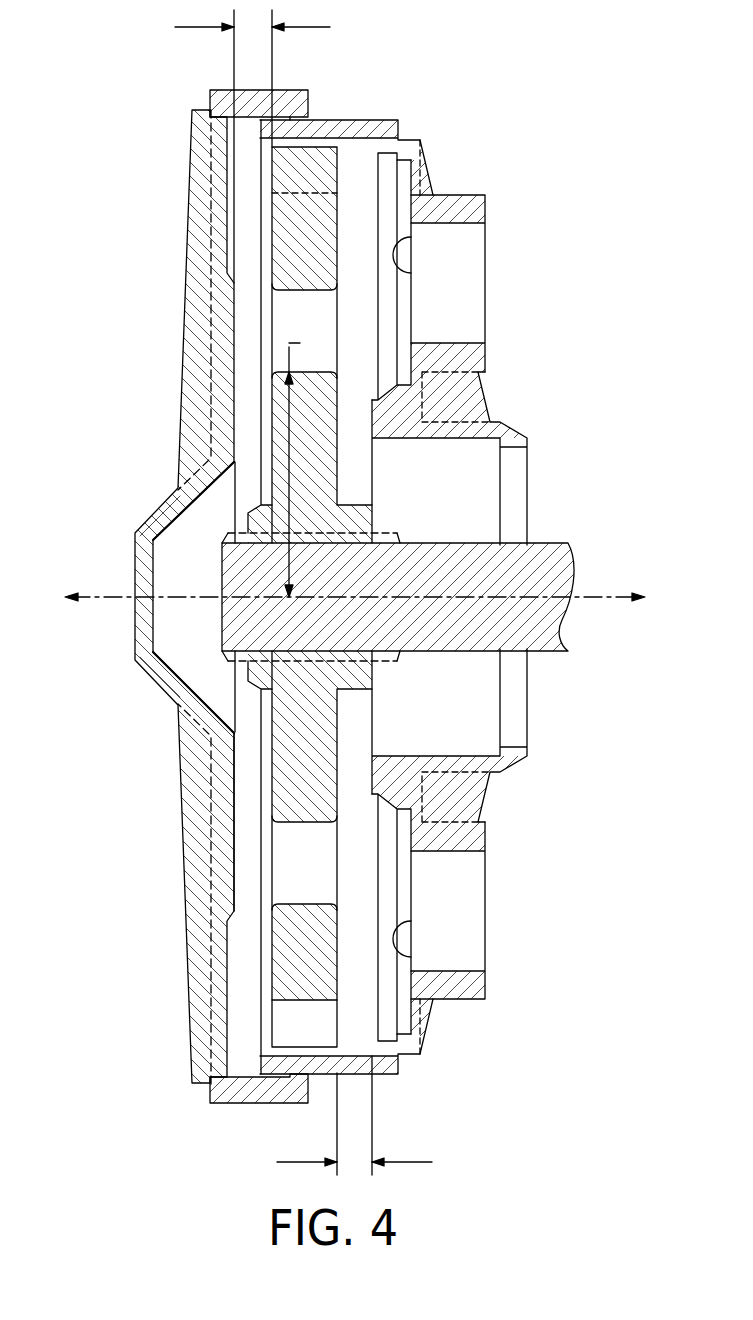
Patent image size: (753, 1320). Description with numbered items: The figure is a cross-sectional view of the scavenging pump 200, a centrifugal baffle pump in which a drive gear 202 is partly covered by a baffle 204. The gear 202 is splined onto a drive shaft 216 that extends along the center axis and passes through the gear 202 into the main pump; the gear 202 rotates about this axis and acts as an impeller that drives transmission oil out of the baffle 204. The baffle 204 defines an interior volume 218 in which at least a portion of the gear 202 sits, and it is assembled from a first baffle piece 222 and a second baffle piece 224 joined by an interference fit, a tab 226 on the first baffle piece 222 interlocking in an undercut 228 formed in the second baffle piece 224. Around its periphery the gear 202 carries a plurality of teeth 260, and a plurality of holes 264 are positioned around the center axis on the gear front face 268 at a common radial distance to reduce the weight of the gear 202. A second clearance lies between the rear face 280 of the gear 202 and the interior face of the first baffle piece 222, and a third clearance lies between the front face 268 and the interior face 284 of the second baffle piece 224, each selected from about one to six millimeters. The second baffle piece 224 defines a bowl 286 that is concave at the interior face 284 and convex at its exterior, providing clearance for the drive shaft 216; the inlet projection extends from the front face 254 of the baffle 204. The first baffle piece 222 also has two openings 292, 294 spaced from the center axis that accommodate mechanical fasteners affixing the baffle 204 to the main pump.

The scavenging pump 200 is at (128, 80).
The drive gear 202 is at (313, 228).
The baffle 204 is at (290, 90).
The drive shaft 216 is at (537, 563).
The interior volume 218 is at (248, 327).
The first baffle piece 222 is at (383, 130).
The second baffle piece 224 is at (190, 215).
The tab 226 is at (267, 1075).
The undercut 228 is at (299, 1077).
The front face 254 is at (190, 933).
The teeth 260 is at (290, 1020).
The holes 264 is at (303, 822).
The gear front face 268 is at (268, 418).
The rear face 280 is at (337, 462).
The interior face 284 is at (232, 847).
The bowl 286 is at (133, 632).
The opening 292 is at (453, 283).
The opening 294 is at (463, 908).